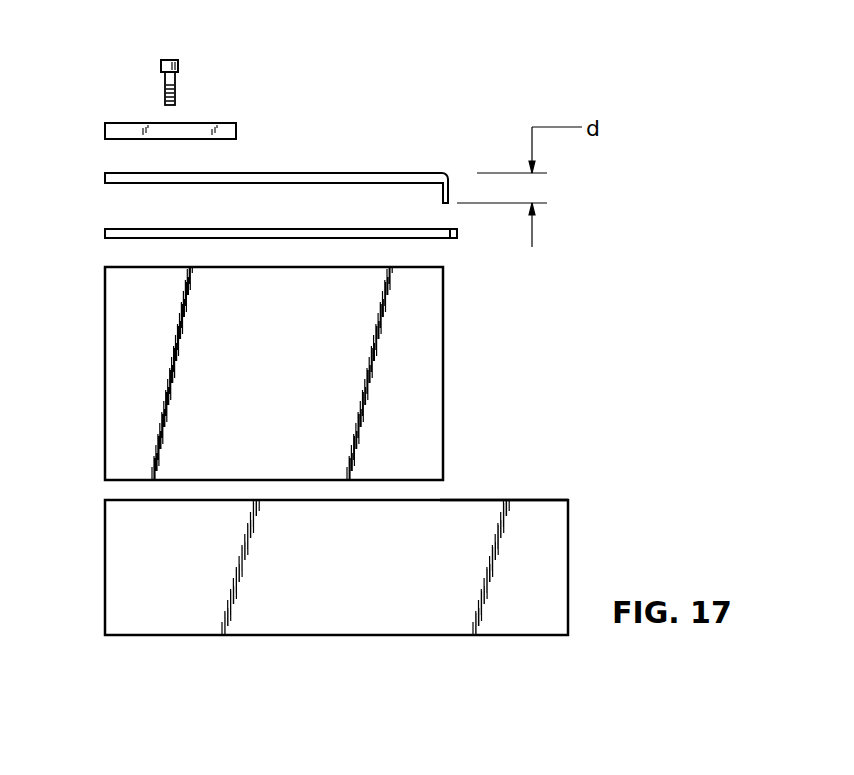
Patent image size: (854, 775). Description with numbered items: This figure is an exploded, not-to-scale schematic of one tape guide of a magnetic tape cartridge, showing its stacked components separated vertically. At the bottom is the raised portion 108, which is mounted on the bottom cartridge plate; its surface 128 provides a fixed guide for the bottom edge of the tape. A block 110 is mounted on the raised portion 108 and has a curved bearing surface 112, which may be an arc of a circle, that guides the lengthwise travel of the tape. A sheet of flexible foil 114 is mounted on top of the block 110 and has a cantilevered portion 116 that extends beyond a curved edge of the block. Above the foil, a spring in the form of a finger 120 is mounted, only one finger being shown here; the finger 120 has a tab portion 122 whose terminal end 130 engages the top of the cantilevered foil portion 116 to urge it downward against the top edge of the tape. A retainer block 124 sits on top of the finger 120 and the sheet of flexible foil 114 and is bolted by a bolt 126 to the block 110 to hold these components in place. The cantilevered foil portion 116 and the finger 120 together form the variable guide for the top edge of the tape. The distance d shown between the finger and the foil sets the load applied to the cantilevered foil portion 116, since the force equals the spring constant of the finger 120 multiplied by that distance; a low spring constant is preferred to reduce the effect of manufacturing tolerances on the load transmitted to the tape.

The raised portion 108 is at (360, 592).
The block 110 is at (282, 392).
The curved bearing surface 112 is at (443, 375).
The sheet of flexible foil 114 is at (106, 240).
The cantilevered foil portion 116 is at (456, 240).
The finger 120 is at (338, 173).
The tab portion 122 is at (450, 196).
The retainer block 124 is at (108, 140).
The bolt 126 is at (161, 62).
The surface of the raised portion 128 is at (521, 500).
The terminal end of the tab 130 is at (441, 204).